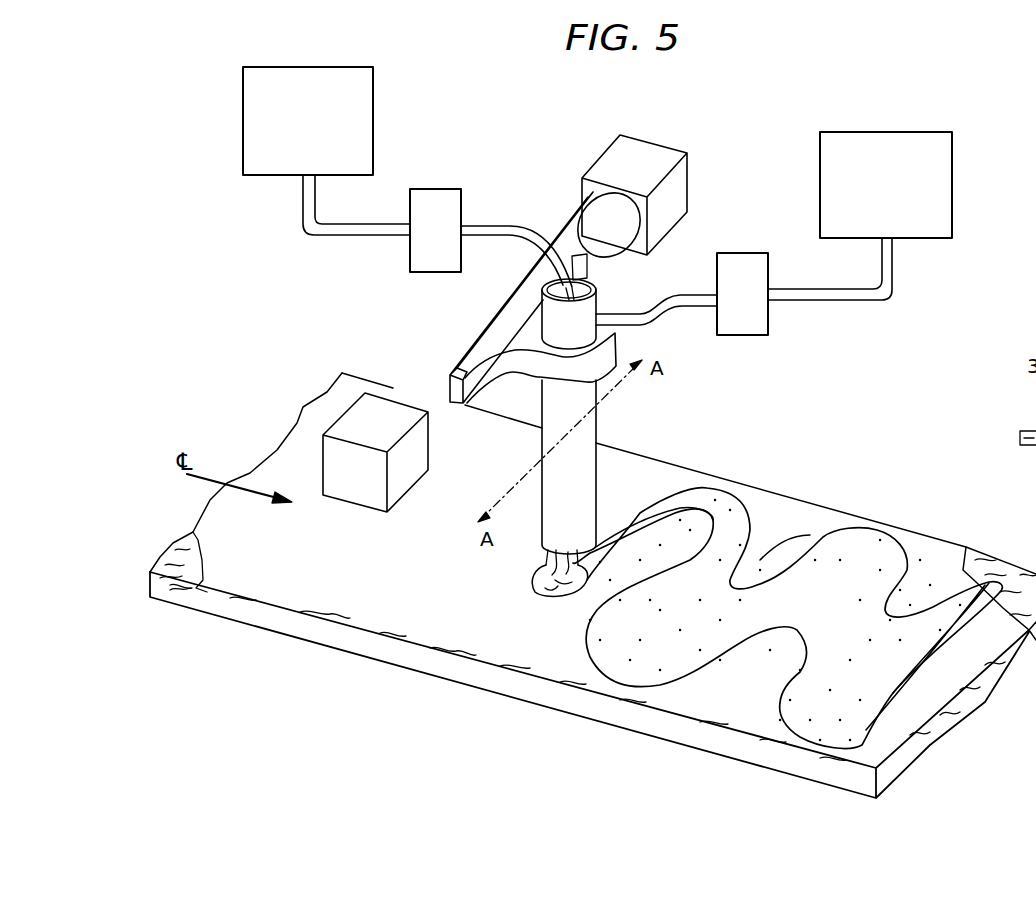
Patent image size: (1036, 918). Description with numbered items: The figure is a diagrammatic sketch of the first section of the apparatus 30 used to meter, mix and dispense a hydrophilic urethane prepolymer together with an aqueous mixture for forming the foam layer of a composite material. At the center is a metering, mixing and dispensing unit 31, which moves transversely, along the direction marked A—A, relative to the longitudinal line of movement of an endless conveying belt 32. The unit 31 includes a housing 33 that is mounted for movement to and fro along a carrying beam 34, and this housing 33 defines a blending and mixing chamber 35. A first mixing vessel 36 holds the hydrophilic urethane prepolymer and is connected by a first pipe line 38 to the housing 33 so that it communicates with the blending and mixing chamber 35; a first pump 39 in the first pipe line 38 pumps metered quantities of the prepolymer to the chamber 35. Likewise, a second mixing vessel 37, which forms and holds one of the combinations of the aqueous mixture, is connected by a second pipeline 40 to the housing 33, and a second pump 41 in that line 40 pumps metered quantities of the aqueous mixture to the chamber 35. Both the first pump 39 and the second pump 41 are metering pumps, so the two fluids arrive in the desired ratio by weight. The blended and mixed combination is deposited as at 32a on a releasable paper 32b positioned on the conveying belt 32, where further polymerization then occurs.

The first section of the apparatus 30 is at (854, 402).
The metering, mixing and dispensing unit 31 is at (614, 488).
The endless conveying belt 32 is at (173, 553).
The deposited blended mixture 32a is at (868, 543).
The releasable paper 32b is at (780, 512).
The housing 33 is at (538, 368).
The carrying beam 34 is at (475, 333).
The blending and mixing chamber 35 is at (598, 463).
The first mixing vessel 36 is at (243, 128).
The second mixing vessel 37 is at (820, 176).
The first pipe line 38 is at (505, 226).
The first pump 39 is at (438, 189).
The second pipeline 40 is at (683, 294).
The second pump 41 is at (768, 318).